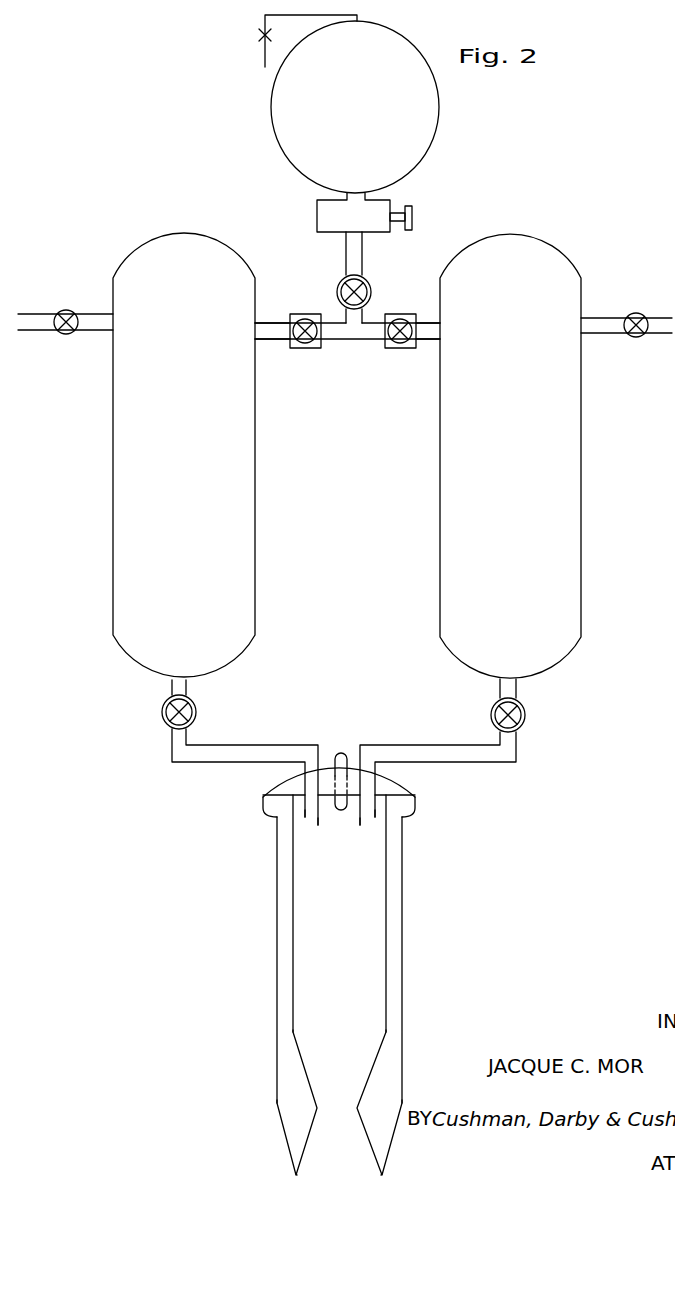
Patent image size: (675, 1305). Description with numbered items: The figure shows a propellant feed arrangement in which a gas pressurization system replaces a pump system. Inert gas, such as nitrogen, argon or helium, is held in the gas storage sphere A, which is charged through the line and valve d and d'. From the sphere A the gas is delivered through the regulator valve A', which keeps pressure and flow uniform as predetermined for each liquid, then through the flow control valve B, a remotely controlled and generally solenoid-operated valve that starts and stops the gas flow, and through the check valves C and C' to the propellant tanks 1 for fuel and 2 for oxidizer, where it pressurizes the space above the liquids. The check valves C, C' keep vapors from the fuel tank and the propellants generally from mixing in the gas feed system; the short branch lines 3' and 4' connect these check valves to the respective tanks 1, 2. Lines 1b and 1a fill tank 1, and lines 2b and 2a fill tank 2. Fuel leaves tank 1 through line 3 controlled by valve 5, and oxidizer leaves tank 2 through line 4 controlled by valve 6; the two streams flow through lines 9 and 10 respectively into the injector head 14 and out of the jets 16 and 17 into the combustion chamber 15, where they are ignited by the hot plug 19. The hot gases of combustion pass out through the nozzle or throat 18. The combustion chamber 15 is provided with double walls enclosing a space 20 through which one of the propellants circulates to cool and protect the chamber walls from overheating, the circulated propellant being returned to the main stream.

The propellant tank for fuel 1 is at (112, 448).
The propellant tank for oxidizer 2 is at (581, 455).
The filling line 1a is at (68, 335).
The filling line 1b is at (65, 298).
The filling line 2a is at (644, 337).
The filling line 2b is at (595, 318).
The fuel line 3 is at (152, 693).
The oxidizer line 4 is at (529, 693).
The connecting pipe from first tank 3' is at (272, 373).
The connecting pipe from second tank 4' is at (428, 373).
The valve 5 is at (166, 724).
The valve 6 is at (520, 727).
The fuel feed line 9 is at (248, 766).
The oxidizer feed line 10 is at (430, 766).
The injector head 14 is at (330, 765).
The combustion chamber 15 is at (339, 985).
The jet 16 is at (308, 818).
The jet 17 is at (367, 822).
The nozzle or throat 18 is at (340, 1126).
The hot plug 19 is at (343, 750).
The space between double walls 20 is at (283, 1043).
The gas storage sphere A is at (355, 107).
The regulator valve A' is at (382, 206).
The flow control valve B is at (372, 296).
The check valve C is at (305, 354).
The check valve C' is at (404, 354).
The line and valve d is at (283, 57).
The line and valve d' is at (241, 45).